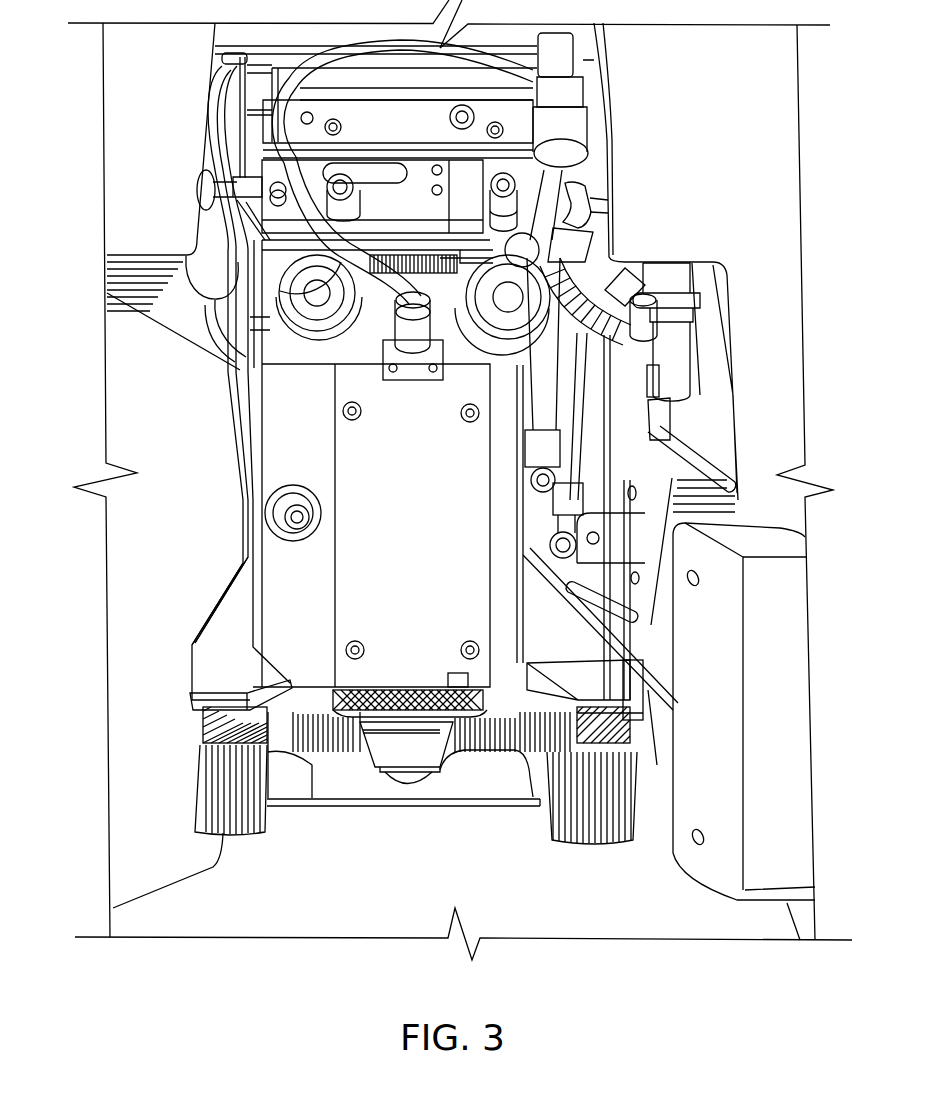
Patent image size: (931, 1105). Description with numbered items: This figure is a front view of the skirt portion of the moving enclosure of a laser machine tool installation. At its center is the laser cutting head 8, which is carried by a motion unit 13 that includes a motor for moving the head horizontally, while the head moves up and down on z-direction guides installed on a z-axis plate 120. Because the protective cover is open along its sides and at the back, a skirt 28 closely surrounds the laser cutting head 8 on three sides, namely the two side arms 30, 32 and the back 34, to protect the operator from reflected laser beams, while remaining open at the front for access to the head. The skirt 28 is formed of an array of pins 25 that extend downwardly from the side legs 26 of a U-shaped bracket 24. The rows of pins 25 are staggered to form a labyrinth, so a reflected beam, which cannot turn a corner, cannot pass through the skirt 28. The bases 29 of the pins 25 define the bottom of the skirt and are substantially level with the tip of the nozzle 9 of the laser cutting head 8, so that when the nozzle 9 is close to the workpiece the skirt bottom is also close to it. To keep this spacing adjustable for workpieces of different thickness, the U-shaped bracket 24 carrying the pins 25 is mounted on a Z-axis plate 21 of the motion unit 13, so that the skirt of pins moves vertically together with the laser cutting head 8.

The laser cutting head 8 is at (363, 763).
The nozzle 9 is at (407, 787).
The motion unit 13 is at (370, 495).
The Z-axis plate 21 is at (280, 262).
The U-shaped bracket 24 is at (223, 635).
The pins 25 is at (607, 822).
The side legs 26 is at (217, 683).
The skirt 28 is at (190, 730).
The bases of the pins 29 is at (213, 843).
The side arm 30 is at (200, 777).
The side arm 32 is at (607, 797).
The back of the skirt 34 is at (463, 750).
The z-axis plate 120 is at (450, 797).